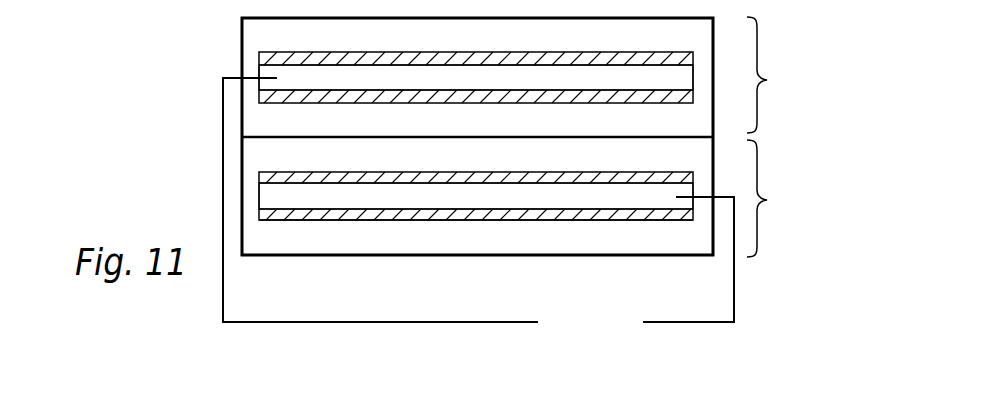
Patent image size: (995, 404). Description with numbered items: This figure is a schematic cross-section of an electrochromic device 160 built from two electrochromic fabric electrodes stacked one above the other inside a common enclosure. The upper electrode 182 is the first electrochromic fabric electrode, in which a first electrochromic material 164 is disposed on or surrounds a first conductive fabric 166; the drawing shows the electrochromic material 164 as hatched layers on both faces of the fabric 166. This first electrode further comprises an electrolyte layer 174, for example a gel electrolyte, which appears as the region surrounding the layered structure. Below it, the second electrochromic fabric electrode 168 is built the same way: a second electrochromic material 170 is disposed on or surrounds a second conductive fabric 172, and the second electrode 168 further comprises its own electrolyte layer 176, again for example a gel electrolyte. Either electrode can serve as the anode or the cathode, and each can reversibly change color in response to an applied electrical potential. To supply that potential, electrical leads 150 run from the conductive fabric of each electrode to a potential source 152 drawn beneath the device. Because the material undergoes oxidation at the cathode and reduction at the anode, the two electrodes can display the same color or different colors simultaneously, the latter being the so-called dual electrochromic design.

The electrical leads 150 is at (222, 193).
The electrical potential source 152 is at (574, 344).
The electrochromic device 160 is at (148, 80).
The first electrochromic material 164 is at (557, 52).
The first conductive fabric 166 is at (405, 76).
The second electrochromic fabric electrode 168 is at (530, 198).
The second electrochromic material 170 is at (560, 172).
The second conductive fabric 172 is at (388, 137).
The electrolyte layer 174 is at (263, 32).
The electrolyte layer 176 is at (453, 238).
The first capacitor 182 is at (530, 75).